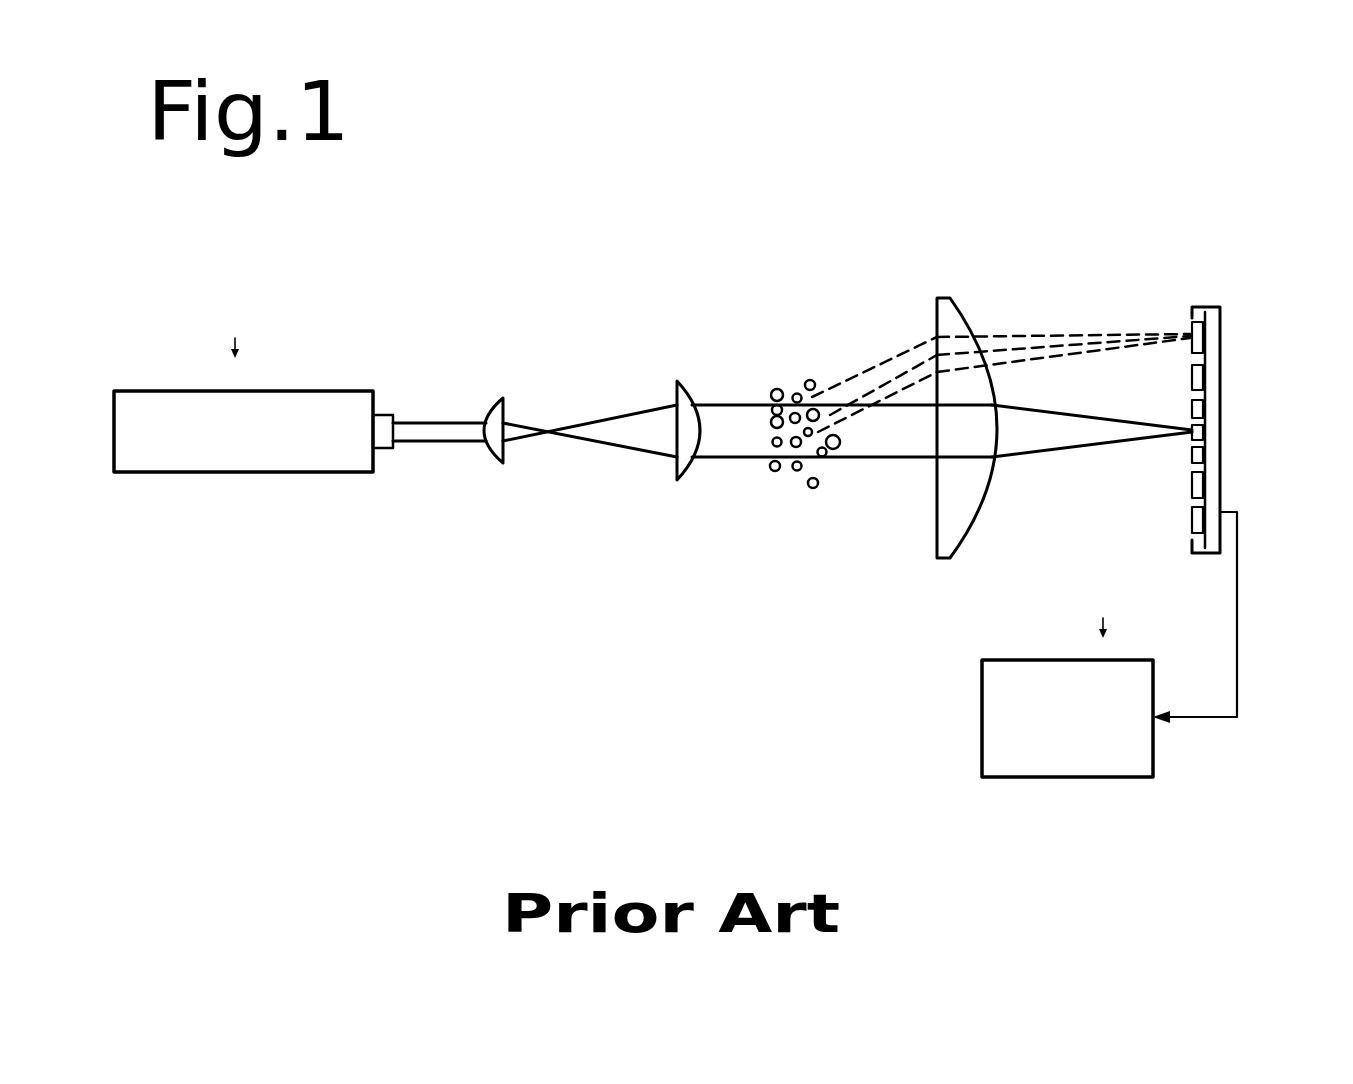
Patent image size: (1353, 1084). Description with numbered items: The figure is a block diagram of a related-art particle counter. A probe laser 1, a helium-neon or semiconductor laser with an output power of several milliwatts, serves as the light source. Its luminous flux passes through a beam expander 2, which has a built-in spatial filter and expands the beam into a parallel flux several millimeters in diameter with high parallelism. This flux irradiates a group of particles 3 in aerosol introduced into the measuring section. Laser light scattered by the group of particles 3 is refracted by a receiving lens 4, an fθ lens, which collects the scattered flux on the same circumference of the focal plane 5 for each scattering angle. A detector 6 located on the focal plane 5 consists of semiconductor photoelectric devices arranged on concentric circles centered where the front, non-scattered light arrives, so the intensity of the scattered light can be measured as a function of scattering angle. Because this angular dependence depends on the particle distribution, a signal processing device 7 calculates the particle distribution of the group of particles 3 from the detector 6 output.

The probe laser 1 is at (215, 472).
The beam expander 2 is at (468, 473).
The group of particles 3 is at (763, 483).
The receiving lens 4 is at (940, 558).
The focal plane 5 is at (1212, 480).
The detector 6 is at (1190, 330).
The signal processing device 7 is at (1072, 777).